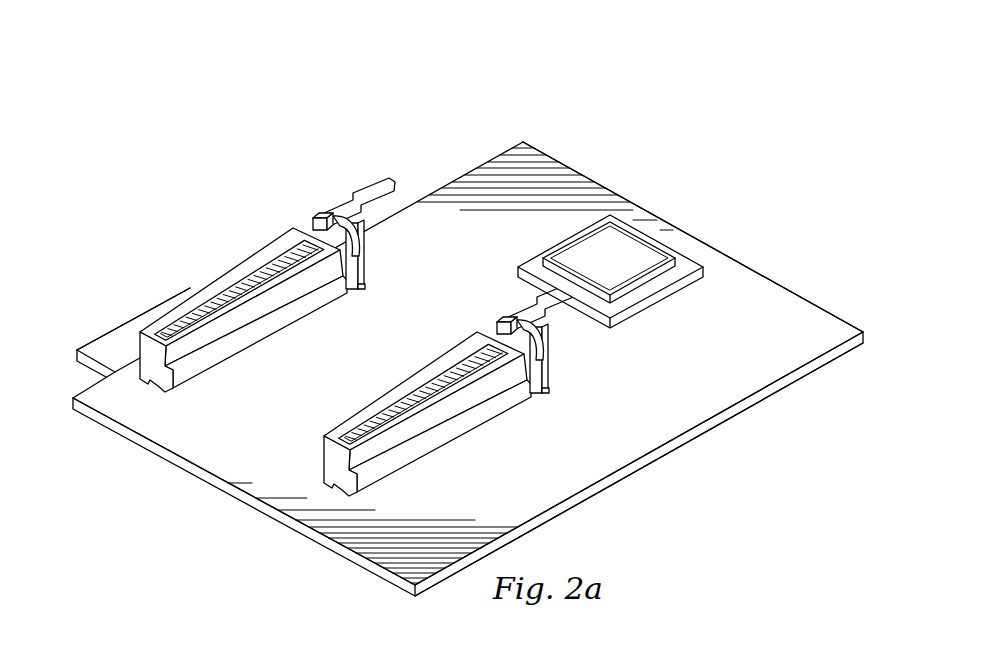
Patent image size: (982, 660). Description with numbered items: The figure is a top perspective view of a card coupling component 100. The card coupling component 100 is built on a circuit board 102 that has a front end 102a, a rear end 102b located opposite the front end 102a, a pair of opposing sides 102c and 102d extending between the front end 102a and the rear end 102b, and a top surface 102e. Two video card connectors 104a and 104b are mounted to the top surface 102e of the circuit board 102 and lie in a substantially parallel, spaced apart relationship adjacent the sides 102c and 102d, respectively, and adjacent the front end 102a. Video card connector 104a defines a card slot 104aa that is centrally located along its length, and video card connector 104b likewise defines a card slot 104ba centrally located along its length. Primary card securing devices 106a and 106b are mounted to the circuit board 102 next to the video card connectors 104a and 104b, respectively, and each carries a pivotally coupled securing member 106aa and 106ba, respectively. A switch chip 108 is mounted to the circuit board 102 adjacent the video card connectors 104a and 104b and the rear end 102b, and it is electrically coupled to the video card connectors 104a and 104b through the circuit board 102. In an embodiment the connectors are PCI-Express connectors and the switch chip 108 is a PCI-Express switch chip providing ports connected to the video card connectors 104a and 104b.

The card coupling component 100 is at (399, 69).
The circuit board 102 is at (803, 301).
The front end 102a is at (242, 494).
The rear end 102b is at (703, 243).
The side 102c is at (182, 290).
The side 102d is at (720, 417).
The top surface 102e is at (608, 468).
The video card connector 104a is at (145, 357).
The card slot 104aa is at (260, 274).
The video card connector 104b is at (333, 459).
The card slot 104ba is at (412, 399).
The primary card securing device 106a is at (318, 218).
The securing member 106aa is at (385, 186).
The primary card securing device 106b is at (502, 324).
The securing member 106ba is at (562, 316).
The switch chip 108 is at (631, 248).